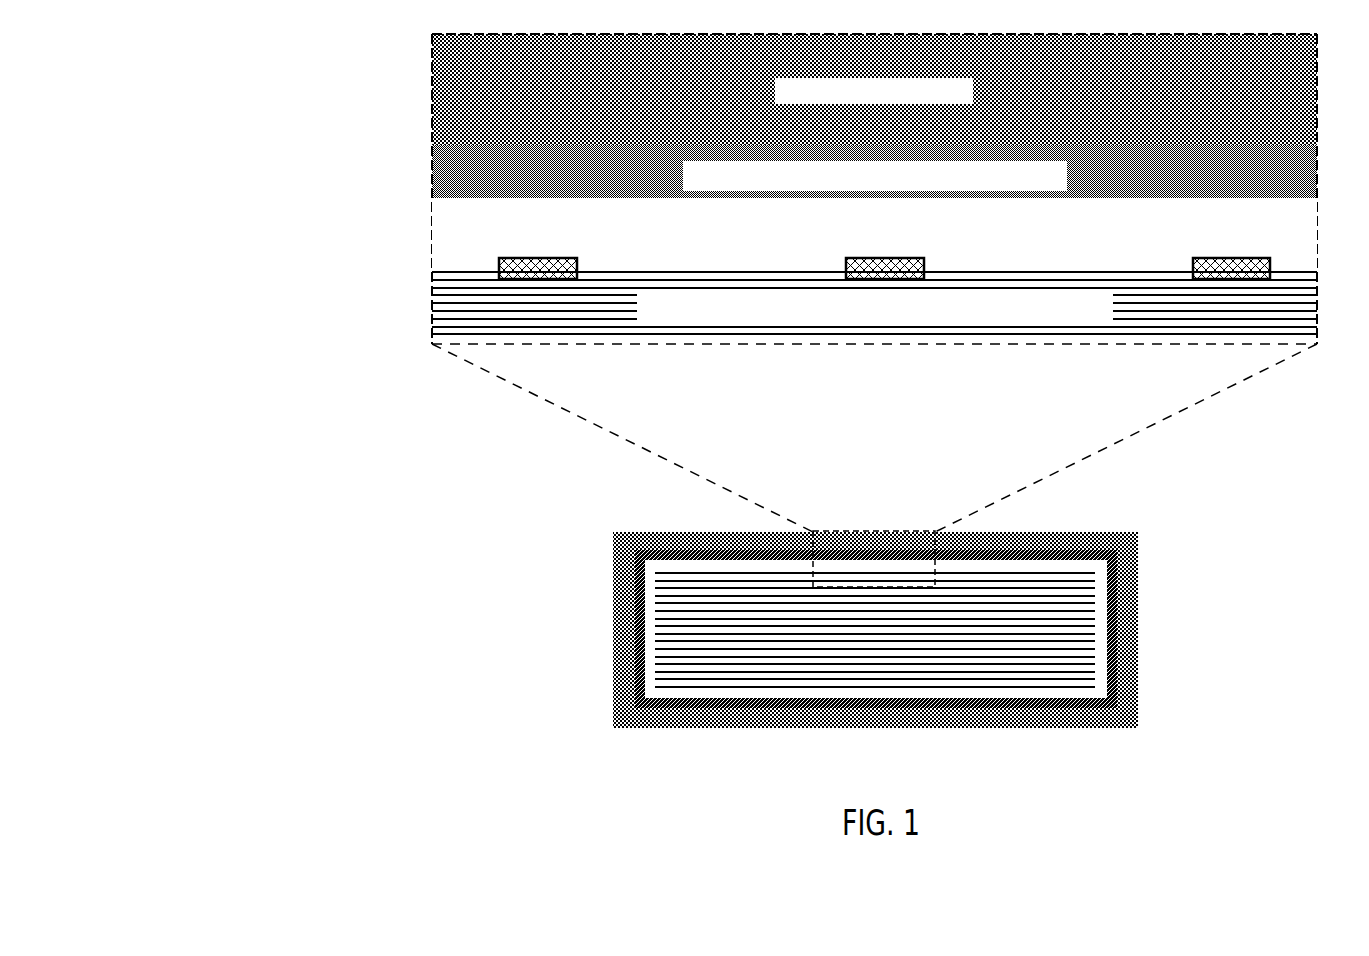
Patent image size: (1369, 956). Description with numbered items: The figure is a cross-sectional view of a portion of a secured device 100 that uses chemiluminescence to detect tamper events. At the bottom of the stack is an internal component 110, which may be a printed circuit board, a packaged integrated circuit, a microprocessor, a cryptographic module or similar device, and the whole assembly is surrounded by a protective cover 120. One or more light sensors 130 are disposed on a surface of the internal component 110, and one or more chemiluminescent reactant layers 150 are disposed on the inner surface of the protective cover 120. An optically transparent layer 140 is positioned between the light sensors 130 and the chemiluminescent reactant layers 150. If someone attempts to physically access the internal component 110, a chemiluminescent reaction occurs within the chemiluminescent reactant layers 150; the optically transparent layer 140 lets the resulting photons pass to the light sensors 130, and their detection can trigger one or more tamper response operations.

The secured device 100 is at (1188, 492).
The internal component 110 is at (1111, 317).
The protective cover 120 is at (874, 89).
The light sensors 130 is at (468, 240).
The optically transparent layer 140 is at (1021, 234).
The chemiluminescent reactant layers 150 is at (1064, 189).